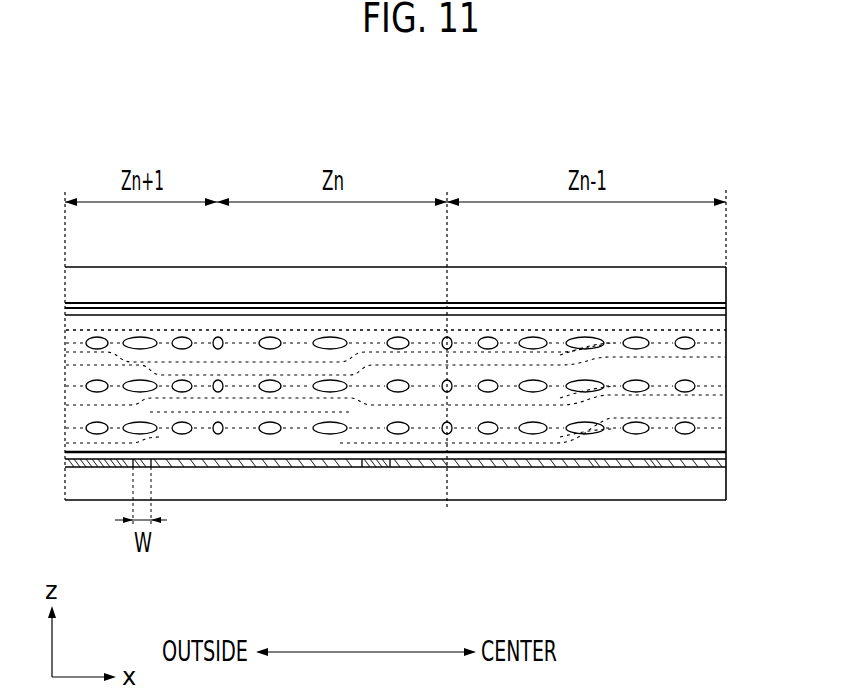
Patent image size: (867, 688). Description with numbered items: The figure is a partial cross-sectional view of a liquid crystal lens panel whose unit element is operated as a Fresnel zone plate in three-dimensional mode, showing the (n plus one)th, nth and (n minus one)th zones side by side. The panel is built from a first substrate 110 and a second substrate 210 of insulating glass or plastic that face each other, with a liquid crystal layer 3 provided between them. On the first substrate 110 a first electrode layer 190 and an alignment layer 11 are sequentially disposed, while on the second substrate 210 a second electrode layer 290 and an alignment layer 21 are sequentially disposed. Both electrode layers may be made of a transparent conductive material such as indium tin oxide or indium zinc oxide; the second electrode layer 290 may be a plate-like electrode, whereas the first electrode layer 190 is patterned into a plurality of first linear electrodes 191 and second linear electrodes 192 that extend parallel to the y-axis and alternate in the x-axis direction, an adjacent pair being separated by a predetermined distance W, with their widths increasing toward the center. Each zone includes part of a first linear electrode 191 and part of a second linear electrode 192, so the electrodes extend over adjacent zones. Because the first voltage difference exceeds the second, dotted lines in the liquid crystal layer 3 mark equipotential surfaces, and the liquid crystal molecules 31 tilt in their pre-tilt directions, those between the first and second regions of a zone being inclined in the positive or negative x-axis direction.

The second substrate 210 is at (715, 285).
The second electrode layer 290 is at (715, 303).
The alignment layer 21 is at (697, 313).
The liquid crystal molecules 31 is at (697, 380).
The liquid crystal layer 3 is at (715, 408).
The alignment layer 11 is at (717, 457).
The first substrate 110 is at (713, 483).
The first electrode layer 190 is at (395, 536).
The first linear electrodes 191 is at (395, 567).
The second linear electrodes 192 is at (90, 468).